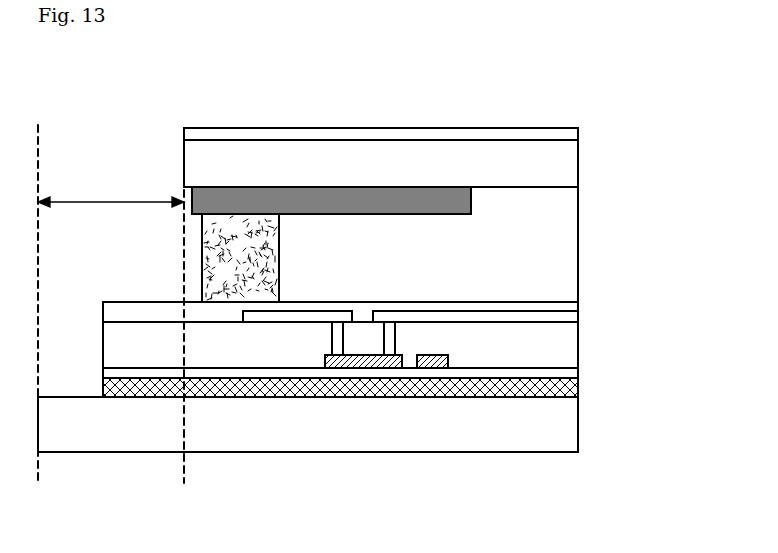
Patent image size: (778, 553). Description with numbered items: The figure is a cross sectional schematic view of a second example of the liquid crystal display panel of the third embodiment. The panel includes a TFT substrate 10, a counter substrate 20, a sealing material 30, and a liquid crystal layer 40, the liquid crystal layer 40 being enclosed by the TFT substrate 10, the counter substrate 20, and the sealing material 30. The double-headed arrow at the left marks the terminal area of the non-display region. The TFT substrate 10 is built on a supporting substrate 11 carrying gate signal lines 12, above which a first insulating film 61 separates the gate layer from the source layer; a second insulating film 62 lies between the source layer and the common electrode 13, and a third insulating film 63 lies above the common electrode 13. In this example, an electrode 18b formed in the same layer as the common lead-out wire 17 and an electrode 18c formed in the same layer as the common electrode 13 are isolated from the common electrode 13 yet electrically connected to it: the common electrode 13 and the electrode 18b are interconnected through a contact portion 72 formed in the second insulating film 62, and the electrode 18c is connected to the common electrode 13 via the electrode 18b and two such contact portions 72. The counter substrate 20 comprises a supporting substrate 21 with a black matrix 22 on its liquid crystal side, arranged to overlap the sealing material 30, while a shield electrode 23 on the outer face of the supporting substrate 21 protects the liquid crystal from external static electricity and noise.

The TFT substrate 10 is at (371, 389).
The supporting substrate 11 is at (568, 426).
The gate signal lines 12 is at (572, 385).
The common electrode 13 is at (575, 314).
The common lead-out wire 17 is at (433, 362).
The electrode formed in the same layer as the common lead-out wire 18b is at (358, 360).
The electrode formed in the same layer as the common electrode 18c is at (278, 315).
The counter substrate 20 is at (381, 126).
The supporting substrate 21 is at (437, 80).
The black matrix 22 is at (418, 192).
The shield electrode 23 is at (578, 135).
The sealing material 30 is at (232, 238).
The liquid crystal layer 40 is at (558, 222).
The first insulating film 61 is at (572, 371).
The second insulating film 62 is at (570, 345).
The third insulating film 63 is at (575, 306).
The contact portion 72 is at (389, 342).